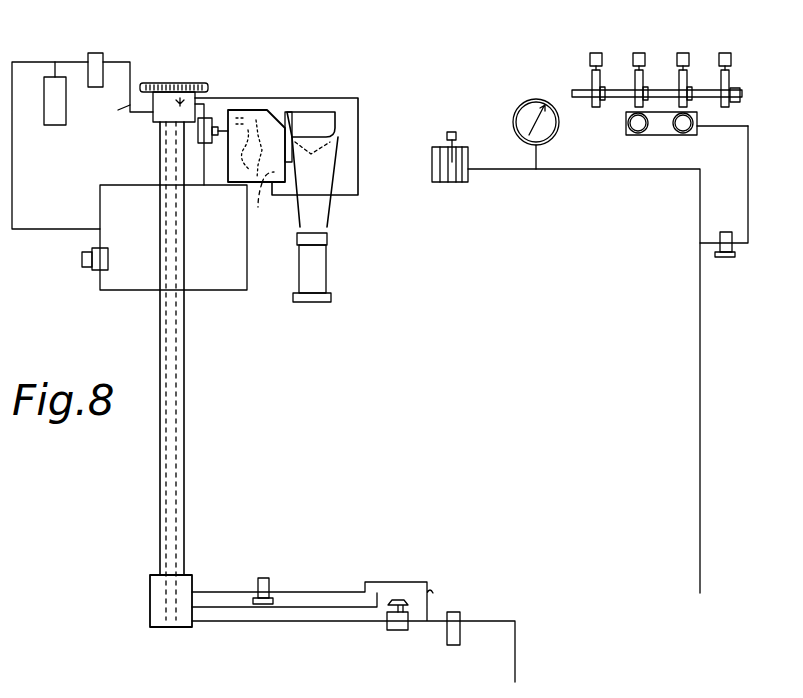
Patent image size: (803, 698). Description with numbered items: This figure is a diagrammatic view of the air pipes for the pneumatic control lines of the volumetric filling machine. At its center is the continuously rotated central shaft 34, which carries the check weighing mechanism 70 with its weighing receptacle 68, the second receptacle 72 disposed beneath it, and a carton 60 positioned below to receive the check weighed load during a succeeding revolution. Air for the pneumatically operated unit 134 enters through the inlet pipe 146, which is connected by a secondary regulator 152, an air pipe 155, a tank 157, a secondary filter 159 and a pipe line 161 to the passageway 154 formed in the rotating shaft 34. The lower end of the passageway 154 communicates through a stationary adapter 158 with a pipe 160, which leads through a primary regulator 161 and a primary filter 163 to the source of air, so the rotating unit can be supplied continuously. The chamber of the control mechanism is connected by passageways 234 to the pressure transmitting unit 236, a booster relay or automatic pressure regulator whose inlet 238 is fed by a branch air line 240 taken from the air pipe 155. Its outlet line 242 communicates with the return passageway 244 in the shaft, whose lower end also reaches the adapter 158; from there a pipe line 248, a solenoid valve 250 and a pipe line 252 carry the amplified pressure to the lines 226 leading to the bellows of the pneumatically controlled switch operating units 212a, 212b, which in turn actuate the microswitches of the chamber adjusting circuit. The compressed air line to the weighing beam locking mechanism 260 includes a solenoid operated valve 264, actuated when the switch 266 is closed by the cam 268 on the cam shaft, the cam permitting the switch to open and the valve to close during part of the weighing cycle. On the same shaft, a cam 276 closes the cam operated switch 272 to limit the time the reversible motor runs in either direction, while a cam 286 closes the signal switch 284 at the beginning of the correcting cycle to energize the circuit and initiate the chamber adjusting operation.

The central shaft 34 is at (185, 403).
The carton 60 is at (325, 267).
The weighing receptacle 68 is at (310, 137).
The check weighing mechanism 70 is at (322, 98).
The second receptacle 72 is at (315, 182).
The pneumatically operated unit 134 is at (255, 118).
The inlet pipe 146 is at (247, 253).
The secondary regulator 152 is at (108, 262).
The passageway 154 is at (166, 165).
The air pipe 155 is at (12, 172).
The tank 157 is at (56, 125).
The stationary adapter 158 is at (150, 598).
The secondary filter 159 is at (97, 53).
The pipe 160 is at (254, 621).
The pipe line / primary regulator 161 is at (398, 631).
The primary filter 163 is at (452, 646).
The pneumatically operated unit 212a is at (643, 130).
The pneumatically operated unit 212b is at (689, 129).
The lines 226 is at (735, 126).
The passageways 234 is at (221, 127).
The pressure transmitting unit 236 is at (198, 131).
The inlet 238 is at (204, 189).
The branch air line 240 is at (117, 186).
The outlet line 242 is at (211, 98).
The return passageway 244 is at (172, 106).
The pipe line 248 is at (700, 468).
The solenoid valve 250 is at (727, 257).
The pipe line 252 is at (748, 203).
The weighing beam locking mechanism 260 is at (275, 196).
The solenoid operated valve 264 is at (272, 567).
The switch 266 is at (641, 53).
The cam 268 is at (632, 88).
The cam operated switch 272 is at (692, 48).
The cam 276 is at (688, 87).
The signal switch 284 is at (731, 60).
The cam 286 is at (729, 84).